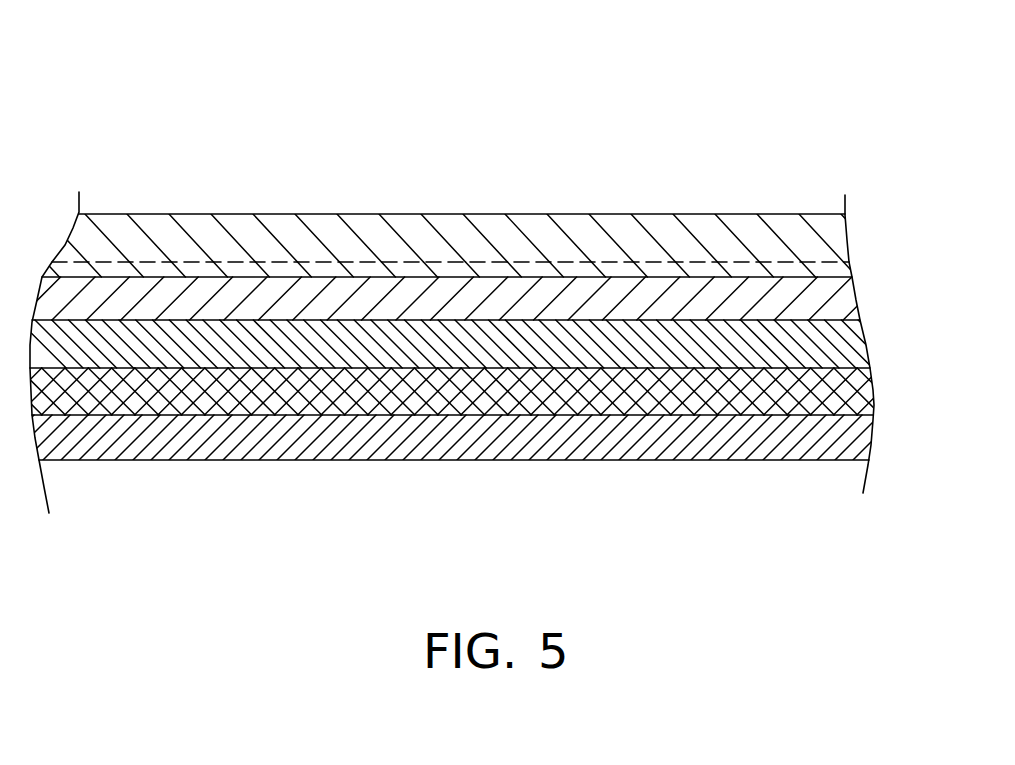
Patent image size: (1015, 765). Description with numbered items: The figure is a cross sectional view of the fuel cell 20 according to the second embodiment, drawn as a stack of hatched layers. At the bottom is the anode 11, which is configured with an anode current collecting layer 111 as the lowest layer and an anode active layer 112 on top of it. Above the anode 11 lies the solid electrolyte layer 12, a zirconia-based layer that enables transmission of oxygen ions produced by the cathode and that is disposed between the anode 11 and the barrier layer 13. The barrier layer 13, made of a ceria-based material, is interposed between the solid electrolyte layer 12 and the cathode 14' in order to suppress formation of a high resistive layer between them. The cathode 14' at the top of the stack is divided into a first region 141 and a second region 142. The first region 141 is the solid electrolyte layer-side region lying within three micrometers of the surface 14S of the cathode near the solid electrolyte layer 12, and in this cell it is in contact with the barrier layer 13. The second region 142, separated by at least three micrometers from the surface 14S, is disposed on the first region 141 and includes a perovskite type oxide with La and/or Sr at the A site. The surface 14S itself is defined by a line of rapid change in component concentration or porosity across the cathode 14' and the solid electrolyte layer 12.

The fuel cell 20 is at (110, 167).
The surface 14S is at (741, 259).
The second region 142 is at (837, 230).
The first region 141 is at (838, 267).
The cathode 14' is at (508, 229).
The barrier layer 13 is at (835, 302).
The solid electrolyte layer 12 is at (835, 349).
The anode active layer 112 is at (870, 388).
The anode current collecting layer 111 is at (860, 435).
The anode 11 is at (506, 414).